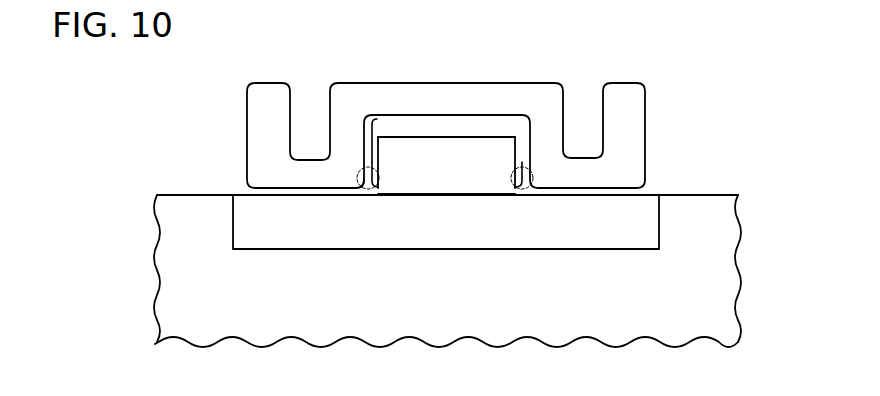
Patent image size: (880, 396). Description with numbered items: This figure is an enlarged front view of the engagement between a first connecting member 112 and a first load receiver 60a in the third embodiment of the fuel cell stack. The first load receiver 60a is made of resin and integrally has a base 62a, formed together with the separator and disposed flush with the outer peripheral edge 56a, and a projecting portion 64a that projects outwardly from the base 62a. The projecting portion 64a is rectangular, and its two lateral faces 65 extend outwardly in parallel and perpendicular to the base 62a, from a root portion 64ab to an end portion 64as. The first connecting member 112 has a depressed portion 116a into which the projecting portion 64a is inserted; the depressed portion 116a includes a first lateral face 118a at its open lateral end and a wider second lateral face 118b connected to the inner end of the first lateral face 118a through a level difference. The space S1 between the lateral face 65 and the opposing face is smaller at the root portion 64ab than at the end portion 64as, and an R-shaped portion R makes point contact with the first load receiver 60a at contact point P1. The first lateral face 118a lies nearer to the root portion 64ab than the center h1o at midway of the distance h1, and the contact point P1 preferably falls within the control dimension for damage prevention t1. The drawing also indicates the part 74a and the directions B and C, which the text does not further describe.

The outer peripheral edge 56a is at (179, 193).
The base 62a is at (600, 243).
The first load receiver 60a is at (313, 188).
The first connecting member 112 is at (544, 82).
The upper layer 74a is at (410, 92).
The depressed portion 116a is at (437, 121).
The projecting portion 64a is at (452, 136).
The end portion 64as is at (480, 134).
The root portion 64ab is at (509, 192).
The second lateral face 118b is at (372, 112).
The first lateral face 118a is at (380, 176).
The lateral face 65 is at (363, 158).
The space S1 is at (345, 160).
The control dimension for damage prevention t1 is at (362, 168).
The distance h1 is at (515, 137).
The center h1o is at (630, 165).
The contact point P1 is at (369, 185).
The R-shaped portion R is at (523, 193).
The thickness direction C is at (766, 225).
The width direction B is at (483, 383).